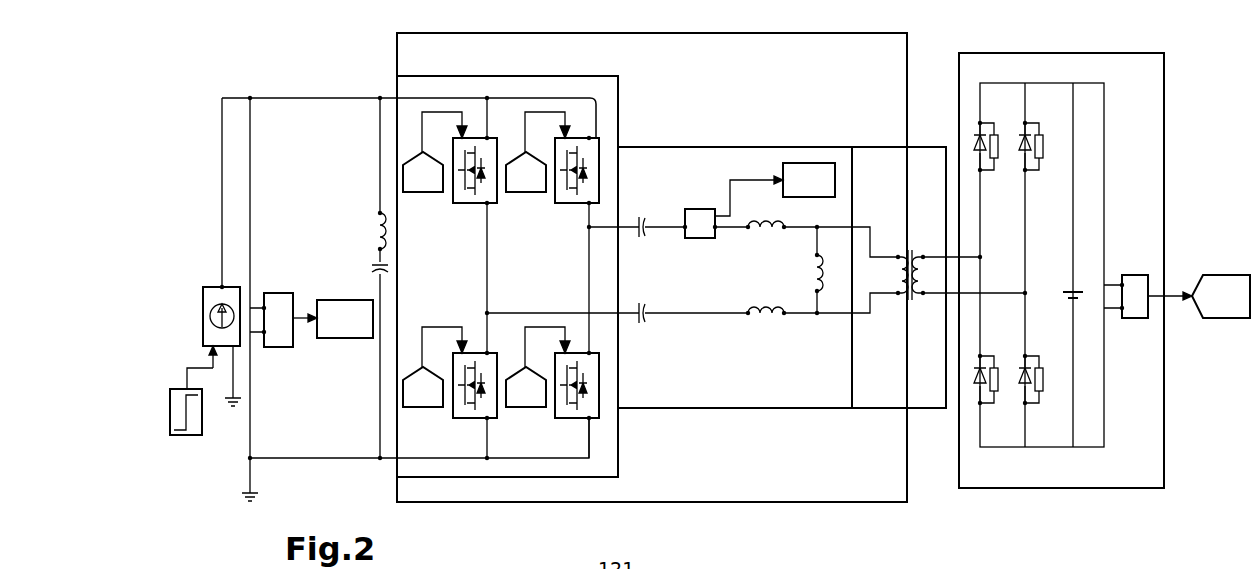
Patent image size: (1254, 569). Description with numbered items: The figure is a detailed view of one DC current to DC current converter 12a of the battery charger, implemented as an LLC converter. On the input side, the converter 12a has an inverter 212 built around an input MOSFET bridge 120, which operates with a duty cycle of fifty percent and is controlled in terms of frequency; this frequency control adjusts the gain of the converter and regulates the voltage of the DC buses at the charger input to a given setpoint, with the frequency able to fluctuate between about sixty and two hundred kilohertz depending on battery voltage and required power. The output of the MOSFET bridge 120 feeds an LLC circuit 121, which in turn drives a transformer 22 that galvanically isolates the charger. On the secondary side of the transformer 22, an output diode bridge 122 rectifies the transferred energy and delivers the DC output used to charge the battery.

The DC current to DC current converter 12a is at (222, 69).
The input MOSFET bridge 120 is at (618, 110).
The LLC circuit 121 is at (748, 390).
The transformer 22 is at (908, 257).
The output diode bridge 122 is at (1164, 120).
The inverter 212 is at (812, 502).